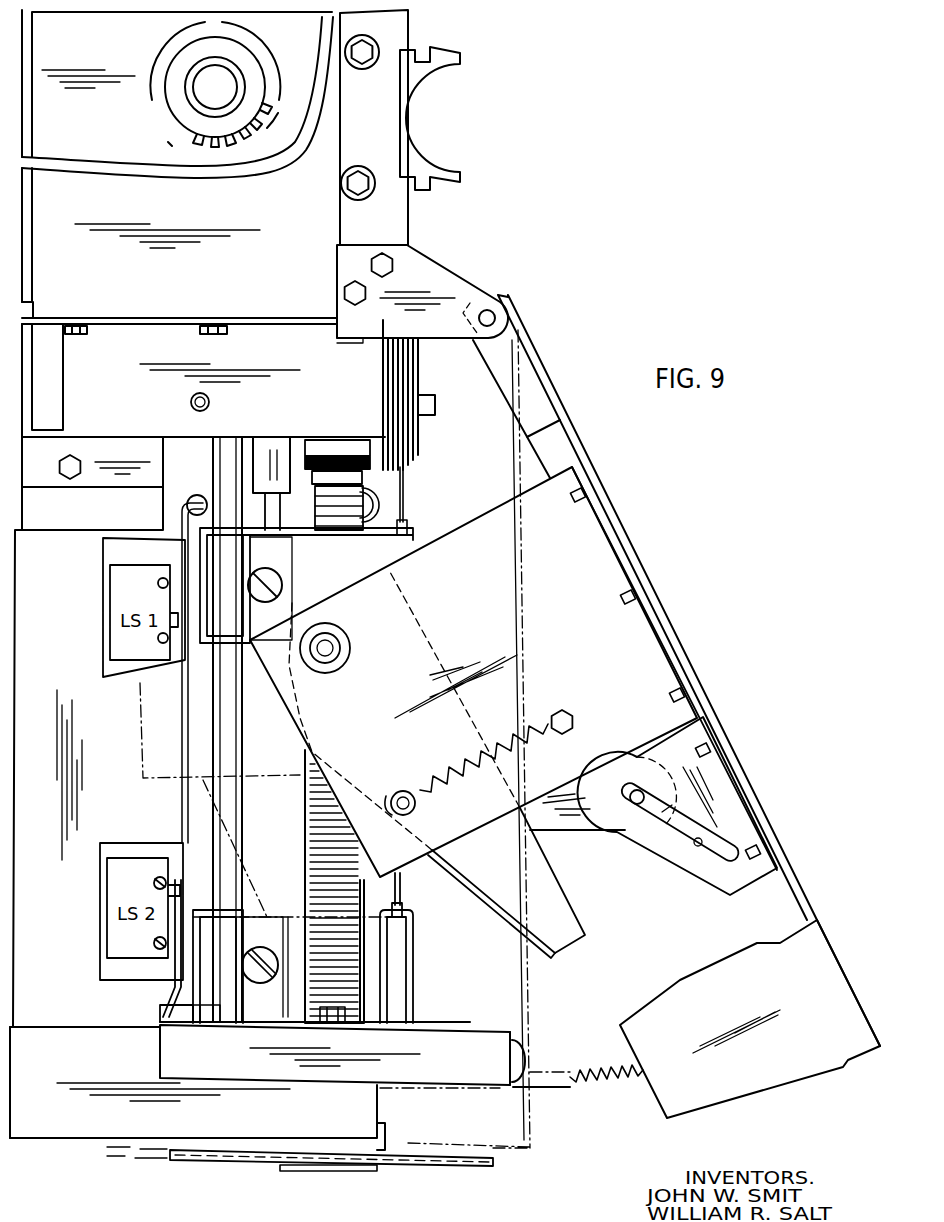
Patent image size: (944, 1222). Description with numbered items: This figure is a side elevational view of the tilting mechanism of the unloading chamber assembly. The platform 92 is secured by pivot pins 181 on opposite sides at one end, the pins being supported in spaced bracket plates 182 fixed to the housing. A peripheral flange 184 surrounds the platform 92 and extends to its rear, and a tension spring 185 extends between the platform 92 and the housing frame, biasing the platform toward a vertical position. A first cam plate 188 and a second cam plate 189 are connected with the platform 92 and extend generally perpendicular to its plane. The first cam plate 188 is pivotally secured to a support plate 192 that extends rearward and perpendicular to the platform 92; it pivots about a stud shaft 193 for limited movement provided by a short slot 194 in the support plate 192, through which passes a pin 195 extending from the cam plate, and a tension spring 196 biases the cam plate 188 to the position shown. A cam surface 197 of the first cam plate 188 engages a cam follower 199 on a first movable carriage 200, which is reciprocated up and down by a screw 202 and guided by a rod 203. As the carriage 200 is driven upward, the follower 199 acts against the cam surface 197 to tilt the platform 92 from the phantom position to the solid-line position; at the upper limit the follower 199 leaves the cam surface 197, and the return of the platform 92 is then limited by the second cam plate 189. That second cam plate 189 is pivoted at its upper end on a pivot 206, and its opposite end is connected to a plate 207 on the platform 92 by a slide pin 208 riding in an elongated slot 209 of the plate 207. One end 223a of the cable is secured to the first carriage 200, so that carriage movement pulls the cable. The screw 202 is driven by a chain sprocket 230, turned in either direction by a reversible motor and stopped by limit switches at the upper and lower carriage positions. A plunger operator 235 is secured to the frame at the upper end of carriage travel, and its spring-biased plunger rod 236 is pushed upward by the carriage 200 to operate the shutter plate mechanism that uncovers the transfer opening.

The platform 92 is at (663, 615).
The pivot pins 181 is at (497, 313).
The bracket plates 182 is at (448, 281).
The peripheral flange 184 is at (737, 1087).
The tension spring 185 is at (603, 1085).
The first cam plate 188 is at (560, 897).
The second cam plate 189 is at (587, 826).
The support plate 192 is at (573, 608).
The stud shaft 193 is at (342, 649).
The short slot 194 is at (393, 815).
The pin 195 is at (403, 790).
The tension spring 196 is at (462, 775).
The cam surface 197 is at (490, 910).
The cam follower 199 is at (280, 586).
The first movable carriage 200 is at (416, 972).
The screw 202 is at (312, 823).
The rod 203 is at (240, 722).
The pivot 206 is at (370, 502).
The plate 207 is at (738, 808).
The slide pin 208 is at (633, 804).
The elongated slot 209 is at (698, 846).
The cable end 223a is at (407, 480).
The chain sprocket 230 is at (473, 1168).
The plunger operator 235 is at (272, 458).
The plunger rod 236 is at (278, 513).